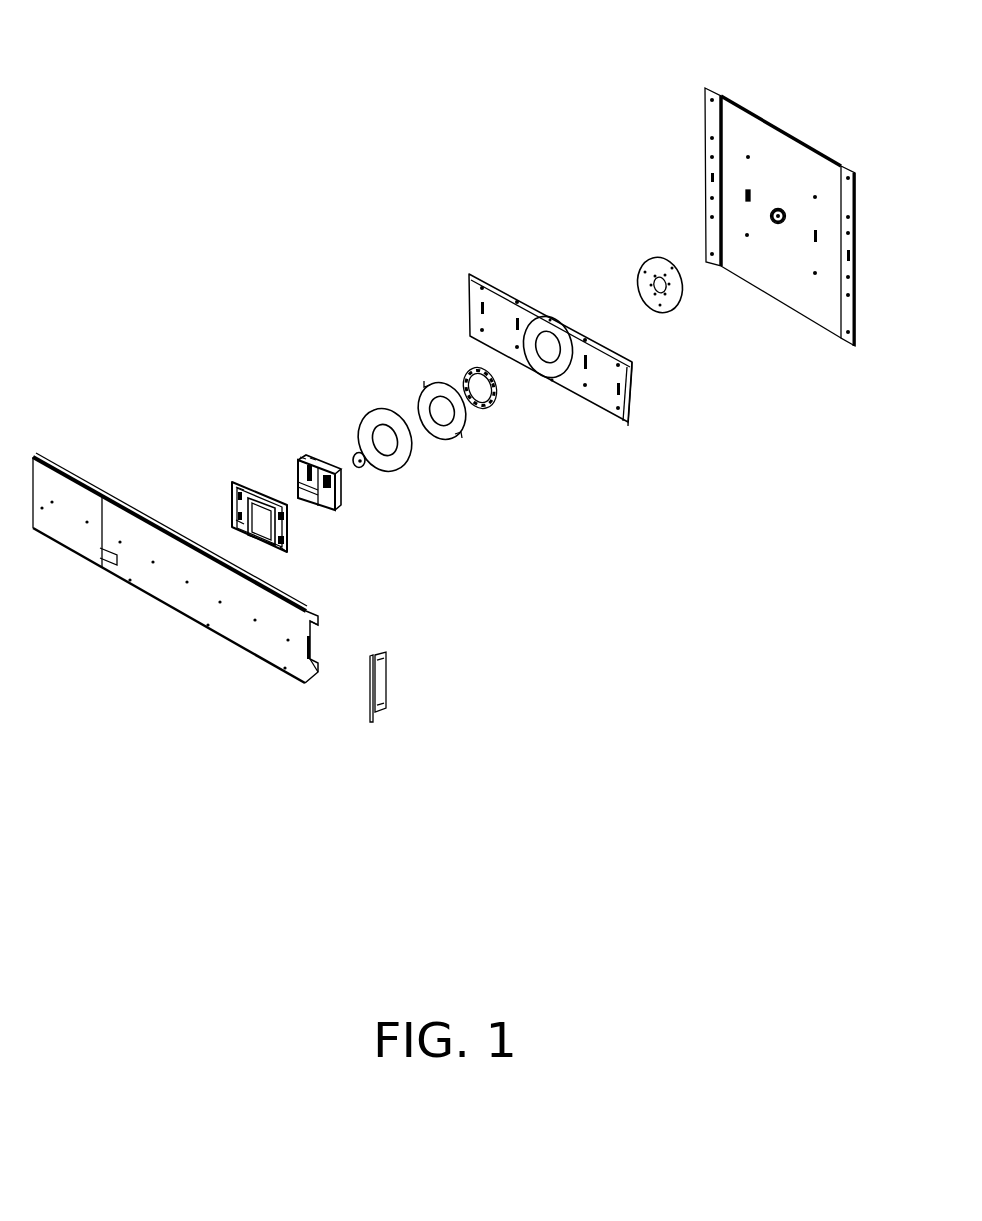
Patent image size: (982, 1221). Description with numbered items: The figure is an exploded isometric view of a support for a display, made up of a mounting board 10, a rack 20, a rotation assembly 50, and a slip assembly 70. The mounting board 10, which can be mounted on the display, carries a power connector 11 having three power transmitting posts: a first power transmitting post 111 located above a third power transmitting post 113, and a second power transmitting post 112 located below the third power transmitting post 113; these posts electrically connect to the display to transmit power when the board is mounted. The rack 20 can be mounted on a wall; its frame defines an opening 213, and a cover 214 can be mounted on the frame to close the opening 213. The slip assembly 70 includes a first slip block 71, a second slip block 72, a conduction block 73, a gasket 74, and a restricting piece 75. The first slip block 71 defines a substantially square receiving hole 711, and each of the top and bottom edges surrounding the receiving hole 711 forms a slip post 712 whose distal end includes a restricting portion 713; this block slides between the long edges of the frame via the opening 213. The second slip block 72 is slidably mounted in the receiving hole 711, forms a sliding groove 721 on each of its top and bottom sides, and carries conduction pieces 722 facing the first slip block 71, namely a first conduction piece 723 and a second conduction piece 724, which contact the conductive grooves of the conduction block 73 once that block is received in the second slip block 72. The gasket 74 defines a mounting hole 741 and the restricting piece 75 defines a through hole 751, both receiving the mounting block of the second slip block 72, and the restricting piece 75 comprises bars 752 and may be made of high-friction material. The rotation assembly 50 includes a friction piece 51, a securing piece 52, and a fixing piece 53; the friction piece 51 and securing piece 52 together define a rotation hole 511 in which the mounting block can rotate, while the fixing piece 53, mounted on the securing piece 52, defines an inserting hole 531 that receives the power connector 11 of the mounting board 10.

The mounting board 10 is at (744, 188).
The power connector 11 is at (782, 223).
The first power transmitting post 111 is at (776, 211).
The second power transmitting post 112 is at (772, 217).
The third power transmitting post 113 is at (746, 195).
The rack 20 is at (194, 640).
The opening 213 is at (313, 632).
The cover 214 is at (378, 687).
The rotation assembly 50 is at (599, 344).
The friction piece 51 is at (548, 361).
The rotation hole 511 is at (553, 342).
The securing piece 52 is at (625, 386).
The fixing piece 53 is at (657, 290).
The inserting hole 531 is at (658, 282).
The slip assembly 70 is at (296, 423).
The first slip block 71 is at (234, 504).
The receiving hole 711 is at (240, 481).
The slip post 712 is at (233, 533).
The restricting portion 713 is at (233, 517).
The second slip block 72 is at (340, 500).
The sliding groove 721 is at (312, 452).
The conduction pieces 722 is at (268, 404).
The first conduction piece 723 is at (309, 457).
The second conduction piece 724 is at (300, 466).
The conduction block 73 is at (362, 467).
The gasket 74 is at (415, 438).
The mounting hole 741 is at (383, 440).
The restricting piece 75 is at (404, 362).
The through hole 751 is at (445, 406).
The bars 752 is at (420, 397).